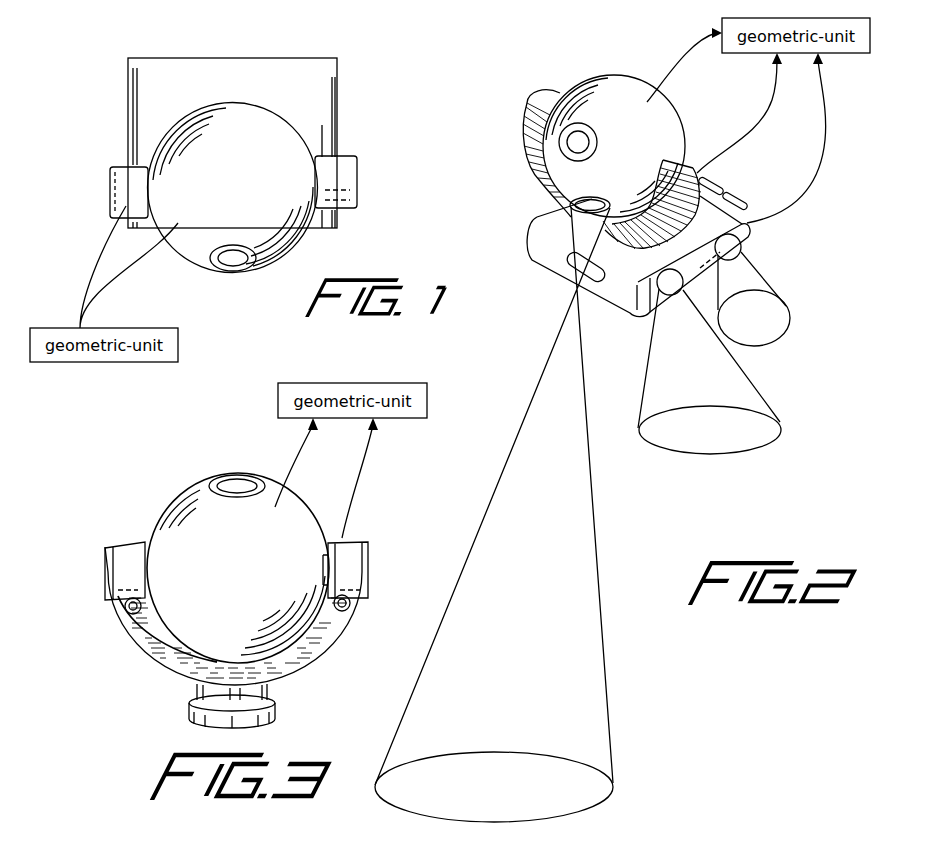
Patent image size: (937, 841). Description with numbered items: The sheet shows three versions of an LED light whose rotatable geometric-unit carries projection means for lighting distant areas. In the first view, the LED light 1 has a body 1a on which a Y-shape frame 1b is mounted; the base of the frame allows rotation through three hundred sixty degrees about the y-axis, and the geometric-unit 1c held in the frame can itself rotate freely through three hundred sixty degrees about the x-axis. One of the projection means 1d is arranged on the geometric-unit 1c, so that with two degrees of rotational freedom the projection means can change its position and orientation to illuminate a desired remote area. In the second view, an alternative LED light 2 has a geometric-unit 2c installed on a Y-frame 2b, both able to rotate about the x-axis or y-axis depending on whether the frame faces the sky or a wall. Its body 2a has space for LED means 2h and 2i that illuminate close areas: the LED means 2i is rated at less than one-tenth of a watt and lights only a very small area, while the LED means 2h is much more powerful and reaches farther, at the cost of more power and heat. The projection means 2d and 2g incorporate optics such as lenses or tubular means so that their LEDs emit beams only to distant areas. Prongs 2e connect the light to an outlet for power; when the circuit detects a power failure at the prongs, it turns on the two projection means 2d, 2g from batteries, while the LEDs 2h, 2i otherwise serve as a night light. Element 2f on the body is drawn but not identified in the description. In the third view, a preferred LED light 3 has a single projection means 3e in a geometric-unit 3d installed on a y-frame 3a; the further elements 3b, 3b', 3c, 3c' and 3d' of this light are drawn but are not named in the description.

In FIG. 1, the LED light 1 is at (173, 102).
In FIG. 1, the body 1a is at (238, 83).
In FIG. 1, the Y-shape frame 1b is at (132, 182).
In FIG. 1, the geometric-unit 1c is at (285, 135).
In FIG. 1, the projection means 1d is at (247, 267).
In FIG. 2, the LED light 2 is at (673, 115).
In FIG. 2, the body 2a is at (533, 223).
In FIG. 2, the Y-frame 2b is at (543, 92).
In FIG. 2, the geometric-unit 2c is at (618, 88).
In FIG. 2, the projection means 2d is at (563, 152).
In FIG. 2, the prongs 2e is at (753, 197).
In FIG. 2, the slot 2f is at (568, 253).
In FIG. 2, the projection means 2g is at (568, 194).
In FIG. 2, the LED means 2h is at (652, 293).
In FIG. 2, the LED means 2i is at (755, 233).
In FIG. 3, the LED light 3 is at (197, 540).
In FIG. 3, the y-frame 3a is at (275, 710).
In FIG. 3, the right holding tab 3b is at (368, 544).
In FIG. 3, the left holding tab 3b' is at (100, 542).
In FIG. 3, the right screw 3c is at (358, 638).
In FIG. 3, the left screw 3c' is at (99, 646).
In FIG. 3, the geometric-unit 3d is at (292, 550).
In FIG. 3, the sphere surface (left) 3d' is at (180, 467).
In FIG. 3, the projection means 3e is at (250, 484).